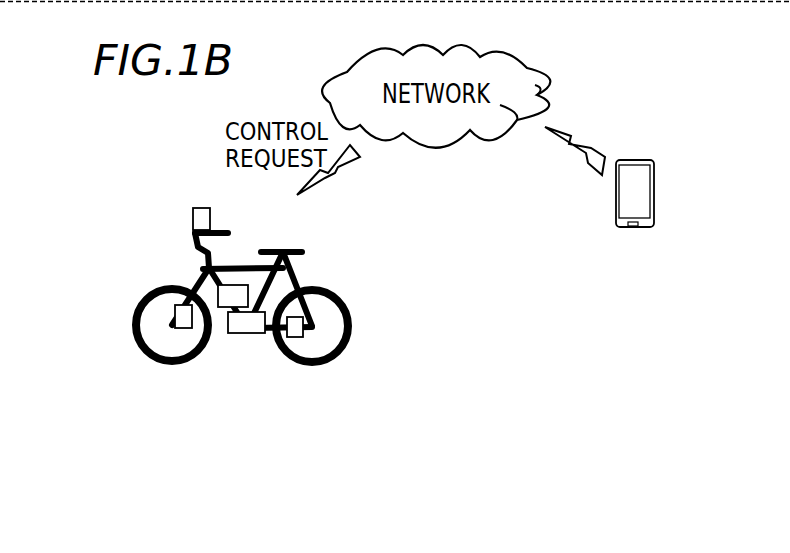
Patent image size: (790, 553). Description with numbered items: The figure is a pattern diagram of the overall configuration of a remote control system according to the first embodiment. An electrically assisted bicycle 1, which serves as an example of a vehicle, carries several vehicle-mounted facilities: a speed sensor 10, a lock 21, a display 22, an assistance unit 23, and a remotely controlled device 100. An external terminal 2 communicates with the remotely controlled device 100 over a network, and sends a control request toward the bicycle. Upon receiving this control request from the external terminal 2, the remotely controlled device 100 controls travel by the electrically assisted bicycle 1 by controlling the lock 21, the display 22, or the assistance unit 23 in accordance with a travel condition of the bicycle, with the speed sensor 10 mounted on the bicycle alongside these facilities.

The electrically assisted bicycle 1 is at (160, 185).
The external terminal 2 is at (630, 158).
The speed sensor 10 is at (177, 317).
The lock 21 is at (287, 337).
The display 22 is at (202, 208).
The assistance unit 23 is at (232, 333).
The remotely controlled device 100 is at (237, 288).